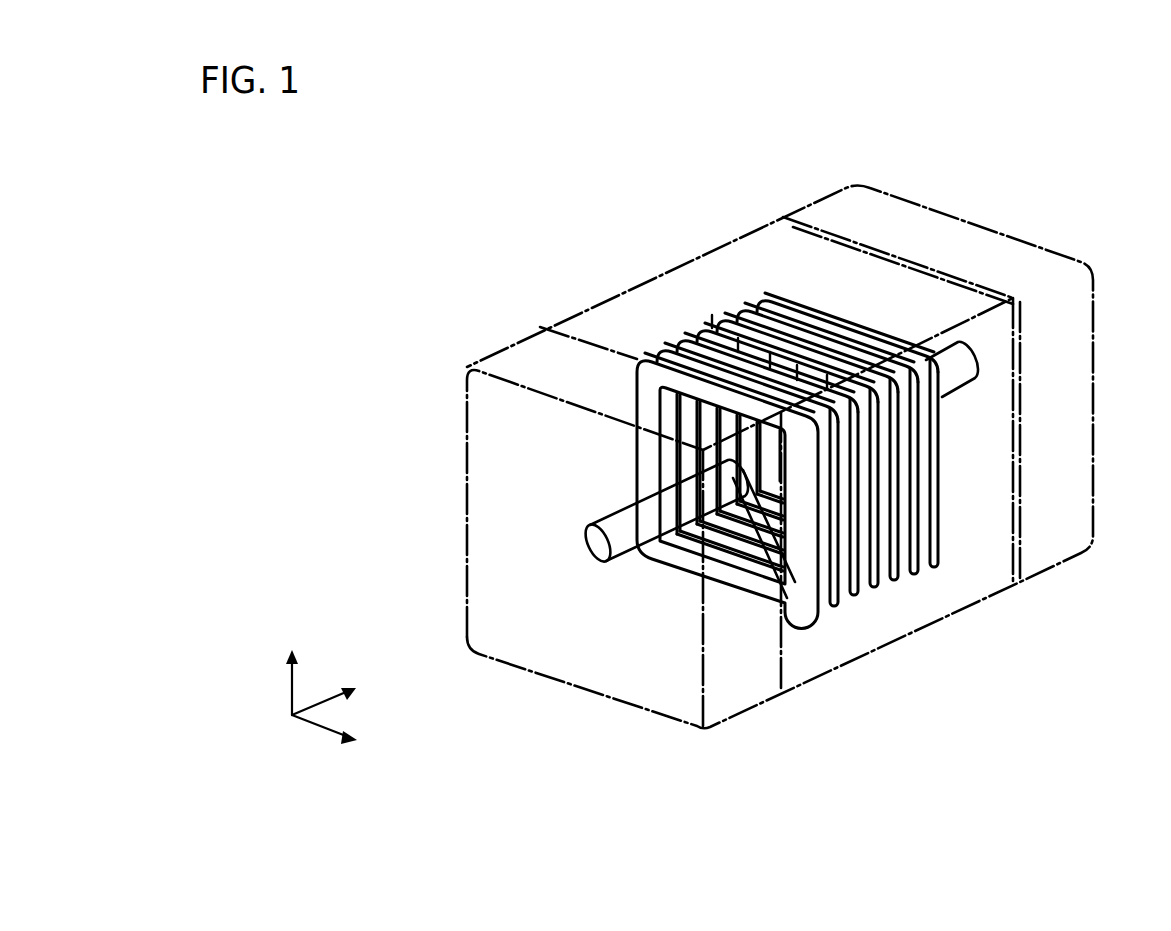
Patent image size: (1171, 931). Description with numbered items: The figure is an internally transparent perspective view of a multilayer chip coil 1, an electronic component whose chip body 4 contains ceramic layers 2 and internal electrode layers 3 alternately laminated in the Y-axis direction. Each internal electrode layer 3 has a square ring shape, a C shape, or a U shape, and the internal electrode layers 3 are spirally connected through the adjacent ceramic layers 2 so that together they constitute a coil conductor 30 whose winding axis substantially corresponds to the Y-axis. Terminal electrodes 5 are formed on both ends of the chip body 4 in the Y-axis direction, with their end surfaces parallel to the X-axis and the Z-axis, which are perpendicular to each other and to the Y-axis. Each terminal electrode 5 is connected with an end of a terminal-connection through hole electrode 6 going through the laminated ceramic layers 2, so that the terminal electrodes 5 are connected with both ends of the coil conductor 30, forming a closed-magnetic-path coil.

The multilayer chip coil 1 is at (646, 272).
The ceramic layers 2 is at (858, 590).
The internal electrode layers 3 is at (918, 566).
The chip body 4 is at (720, 250).
The terminal electrodes 5 is at (465, 442).
The terminal-connection through hole electrode 6 is at (625, 540).
The coil conductor 30 is at (944, 527).